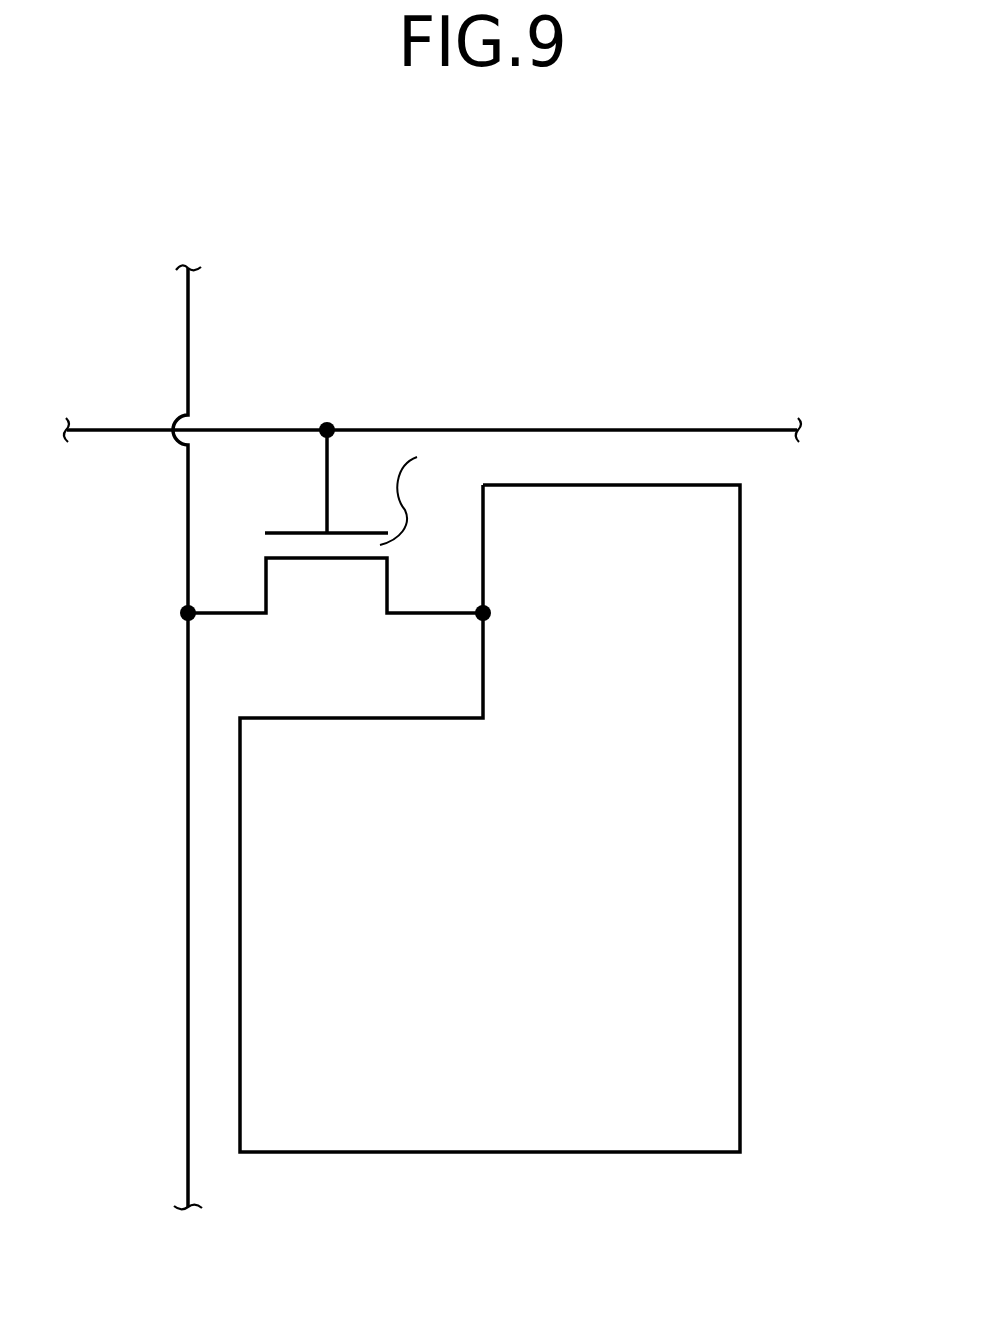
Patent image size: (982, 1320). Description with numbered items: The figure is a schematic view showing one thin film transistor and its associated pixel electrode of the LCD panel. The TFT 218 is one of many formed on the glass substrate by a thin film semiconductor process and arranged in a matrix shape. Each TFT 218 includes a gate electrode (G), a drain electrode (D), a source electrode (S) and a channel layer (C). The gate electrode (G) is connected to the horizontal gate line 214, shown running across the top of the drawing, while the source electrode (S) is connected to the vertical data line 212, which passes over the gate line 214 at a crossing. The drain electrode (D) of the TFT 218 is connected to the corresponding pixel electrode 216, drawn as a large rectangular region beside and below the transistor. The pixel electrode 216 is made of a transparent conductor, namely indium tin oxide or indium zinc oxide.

The data line 212 is at (187, 682).
The gate line 214 is at (650, 430).
The pixel electrode 216 is at (690, 755).
The thin film transistor 218 is at (264, 545).